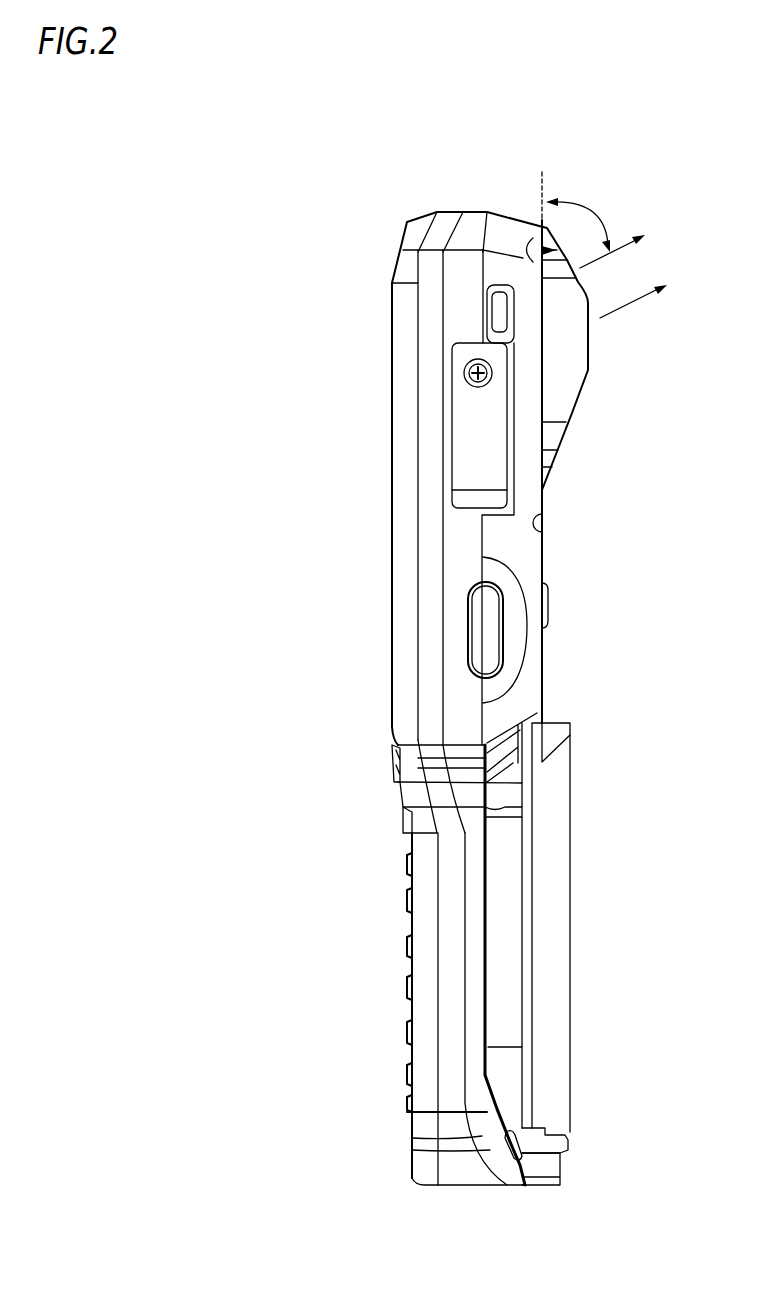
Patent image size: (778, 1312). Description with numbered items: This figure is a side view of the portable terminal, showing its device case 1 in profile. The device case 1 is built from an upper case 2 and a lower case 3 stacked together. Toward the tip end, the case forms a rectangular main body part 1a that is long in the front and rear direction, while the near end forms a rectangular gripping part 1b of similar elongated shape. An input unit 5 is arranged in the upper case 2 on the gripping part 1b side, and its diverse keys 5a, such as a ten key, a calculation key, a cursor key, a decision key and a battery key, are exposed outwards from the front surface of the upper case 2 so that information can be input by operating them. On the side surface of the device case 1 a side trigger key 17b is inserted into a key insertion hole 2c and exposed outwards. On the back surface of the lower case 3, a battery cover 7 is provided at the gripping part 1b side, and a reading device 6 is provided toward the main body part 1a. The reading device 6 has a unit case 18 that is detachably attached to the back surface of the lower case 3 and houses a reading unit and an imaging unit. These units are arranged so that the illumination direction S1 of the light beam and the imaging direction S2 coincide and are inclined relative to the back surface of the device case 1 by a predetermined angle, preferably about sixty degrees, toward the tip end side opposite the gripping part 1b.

The device case 1 is at (408, 212).
The main body part 1a is at (463, 530).
The gripping part 1b is at (488, 945).
The upper case 2 is at (400, 565).
The key insertion hole 2c is at (503, 598).
The lower case 3 is at (522, 548).
The input unit 5 is at (394, 1037).
The diverse keys 5a is at (405, 947).
The reading device 6 is at (602, 347).
The battery cover 7 is at (555, 880).
The side trigger key 17b is at (487, 630).
The unit case 18 is at (562, 387).
The illumination direction S1 is at (632, 302).
The imaging direction S2 is at (627, 250).